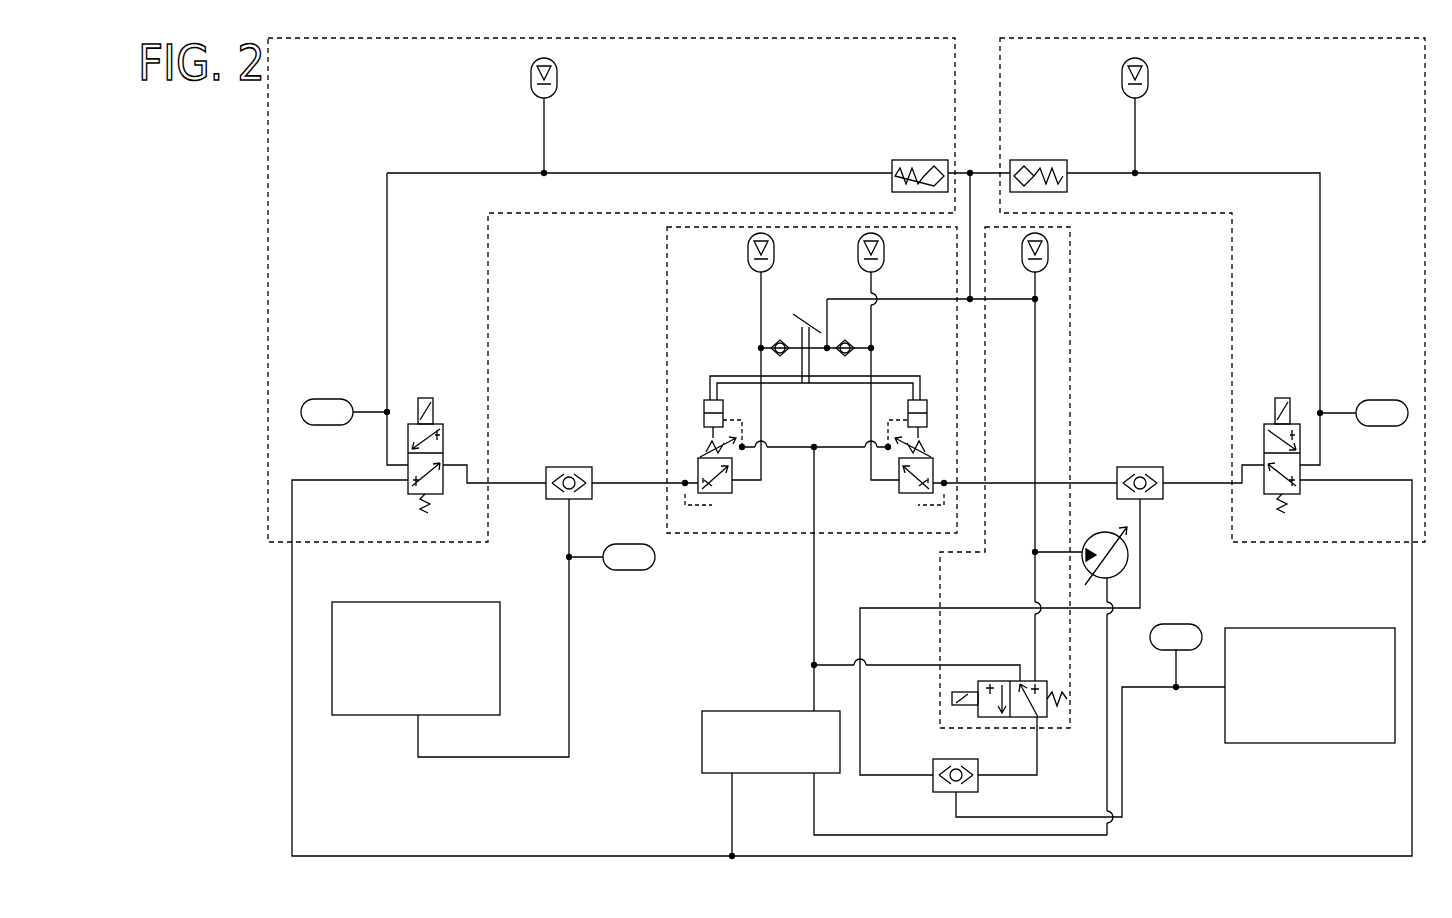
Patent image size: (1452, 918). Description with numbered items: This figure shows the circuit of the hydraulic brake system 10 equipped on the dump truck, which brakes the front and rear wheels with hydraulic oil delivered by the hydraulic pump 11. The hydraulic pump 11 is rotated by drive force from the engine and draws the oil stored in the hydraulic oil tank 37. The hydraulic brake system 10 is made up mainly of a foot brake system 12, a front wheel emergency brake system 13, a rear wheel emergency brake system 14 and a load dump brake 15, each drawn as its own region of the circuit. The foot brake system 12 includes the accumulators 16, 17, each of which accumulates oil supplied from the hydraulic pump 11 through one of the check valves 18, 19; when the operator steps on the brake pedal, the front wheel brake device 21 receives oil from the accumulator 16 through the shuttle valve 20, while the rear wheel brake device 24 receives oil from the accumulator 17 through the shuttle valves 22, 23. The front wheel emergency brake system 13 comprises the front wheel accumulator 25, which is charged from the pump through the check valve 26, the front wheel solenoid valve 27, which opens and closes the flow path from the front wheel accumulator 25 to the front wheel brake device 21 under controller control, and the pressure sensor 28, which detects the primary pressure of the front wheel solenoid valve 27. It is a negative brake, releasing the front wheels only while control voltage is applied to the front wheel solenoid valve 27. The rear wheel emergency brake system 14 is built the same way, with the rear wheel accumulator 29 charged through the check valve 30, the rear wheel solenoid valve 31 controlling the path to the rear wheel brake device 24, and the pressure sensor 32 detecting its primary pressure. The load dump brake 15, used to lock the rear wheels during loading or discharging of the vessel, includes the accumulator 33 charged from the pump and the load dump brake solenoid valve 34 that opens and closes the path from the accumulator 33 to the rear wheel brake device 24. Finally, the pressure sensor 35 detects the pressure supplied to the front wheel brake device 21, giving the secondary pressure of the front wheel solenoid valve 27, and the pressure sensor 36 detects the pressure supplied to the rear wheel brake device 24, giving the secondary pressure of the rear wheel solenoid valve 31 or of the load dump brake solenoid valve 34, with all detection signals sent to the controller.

The hydraulic brake system 10 is at (694, 642).
The hydraulic pump 11 is at (1092, 534).
The foot brake system 12 is at (765, 536).
The front wheel emergency brake system 13 is at (597, 214).
The rear wheel emergency brake system 14 is at (1128, 214).
The load dump brake 15 is at (938, 561).
The accumulator 16 is at (752, 250).
The accumulator 17 is at (861, 255).
The check valve 18 is at (780, 339).
The check valve 19 is at (850, 340).
The shuttle valve 20 is at (585, 474).
The front wheel brake device 21 is at (345, 717).
The shuttle valve 22 is at (1158, 476).
The shuttle valve 23 is at (930, 787).
The rear wheel brake device 24 is at (1305, 627).
The front wheel accumulator 25 is at (558, 72).
The check valve 26 is at (905, 158).
The front wheel solenoid valve 27 is at (436, 397).
The pressure sensor 28 is at (330, 399).
The rear wheel accumulator 29 is at (1150, 70).
The check valve 30 is at (1028, 158).
The rear wheel solenoid valve 31 is at (1276, 398).
The pressure sensor 32 is at (1381, 400).
The accumulator 33 is at (1027, 255).
The load dump brake solenoid valve 34 is at (987, 690).
The pressure sensor 35 is at (657, 560).
The pressure sensor 36 is at (1180, 623).
The hydraulic oil tank 37 is at (700, 758).